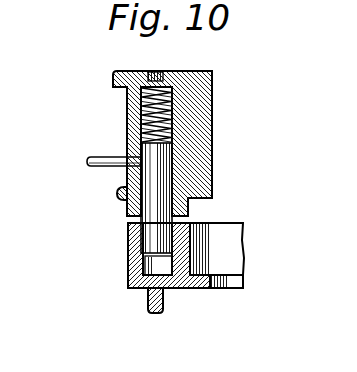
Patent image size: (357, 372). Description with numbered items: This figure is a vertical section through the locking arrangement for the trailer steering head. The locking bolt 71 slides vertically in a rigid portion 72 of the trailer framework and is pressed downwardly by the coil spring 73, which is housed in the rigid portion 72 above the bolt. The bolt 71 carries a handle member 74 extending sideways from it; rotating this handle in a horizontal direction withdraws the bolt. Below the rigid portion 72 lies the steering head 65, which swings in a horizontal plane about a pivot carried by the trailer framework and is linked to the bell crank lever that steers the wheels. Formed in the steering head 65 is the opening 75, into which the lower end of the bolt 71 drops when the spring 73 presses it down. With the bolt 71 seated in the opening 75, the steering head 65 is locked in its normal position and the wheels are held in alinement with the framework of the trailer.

The rigid portion of the framework 72 is at (197, 133).
The coil spring 73 is at (143, 108).
The locking bolt 71 is at (160, 200).
The handle member 74 is at (87, 160).
The steering head 65 is at (225, 248).
The opening 75 is at (155, 267).